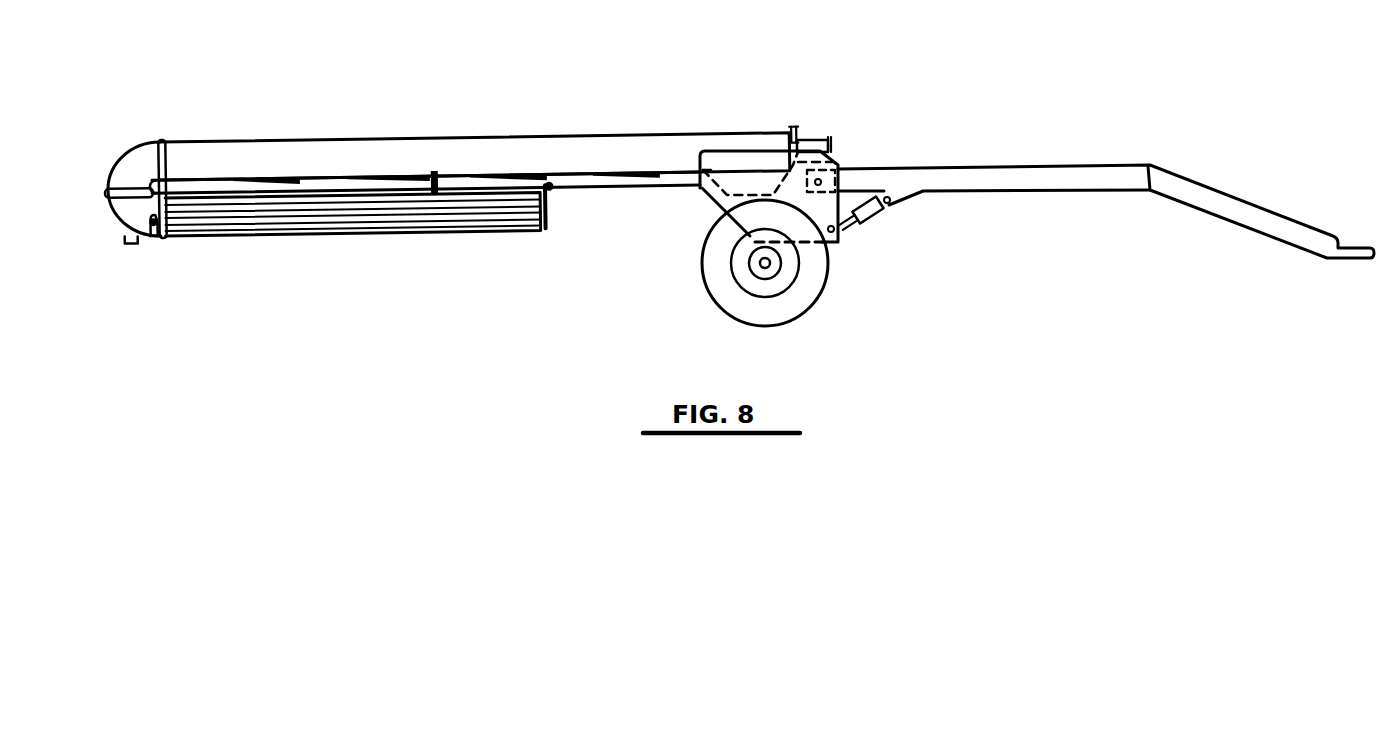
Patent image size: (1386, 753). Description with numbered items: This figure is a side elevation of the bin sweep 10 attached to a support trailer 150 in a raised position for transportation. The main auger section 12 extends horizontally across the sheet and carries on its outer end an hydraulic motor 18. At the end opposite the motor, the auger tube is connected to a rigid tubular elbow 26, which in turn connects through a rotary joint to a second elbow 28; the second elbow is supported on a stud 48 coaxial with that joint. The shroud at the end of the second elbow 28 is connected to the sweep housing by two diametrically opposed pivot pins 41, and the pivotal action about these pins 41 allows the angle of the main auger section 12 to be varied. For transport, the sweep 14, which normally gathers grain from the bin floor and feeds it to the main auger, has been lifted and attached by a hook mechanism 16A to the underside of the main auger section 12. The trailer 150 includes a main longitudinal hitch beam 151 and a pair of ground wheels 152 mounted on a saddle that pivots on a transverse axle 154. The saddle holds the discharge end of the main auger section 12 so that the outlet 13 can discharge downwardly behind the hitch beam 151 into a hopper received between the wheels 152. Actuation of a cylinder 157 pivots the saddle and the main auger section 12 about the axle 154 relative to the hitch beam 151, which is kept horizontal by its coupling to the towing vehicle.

The bin sweep 10 is at (601, 74).
The main auger section 12 is at (334, 134).
The outlet 13 is at (720, 180).
The sweep 14 is at (478, 242).
The hook mechanism 16A is at (434, 180).
The hydraulic motor 18 is at (833, 138).
The rigid tubular elbow 26 is at (116, 148).
The second elbow 28 is at (103, 216).
The pivot pins 41 is at (152, 237).
The stud 48 is at (126, 243).
The trailer 150 is at (748, 168).
The main longitudinal hitch beam 151 is at (1050, 158).
The ground wheels 152 is at (822, 293).
The transverse axle 154 is at (765, 263).
The cylinder 157 is at (879, 209).